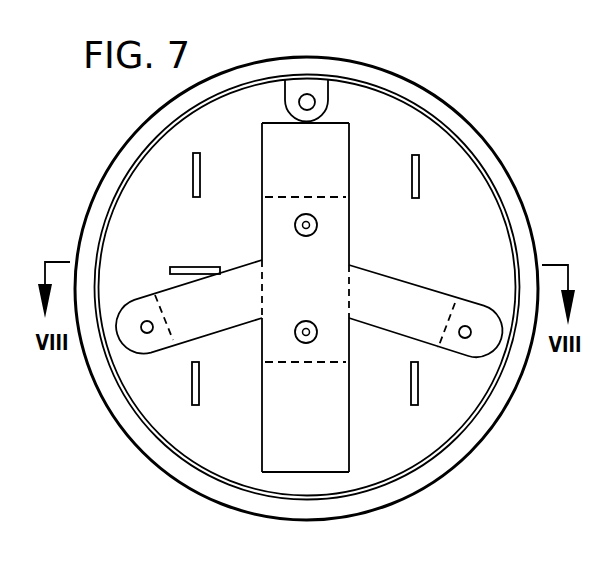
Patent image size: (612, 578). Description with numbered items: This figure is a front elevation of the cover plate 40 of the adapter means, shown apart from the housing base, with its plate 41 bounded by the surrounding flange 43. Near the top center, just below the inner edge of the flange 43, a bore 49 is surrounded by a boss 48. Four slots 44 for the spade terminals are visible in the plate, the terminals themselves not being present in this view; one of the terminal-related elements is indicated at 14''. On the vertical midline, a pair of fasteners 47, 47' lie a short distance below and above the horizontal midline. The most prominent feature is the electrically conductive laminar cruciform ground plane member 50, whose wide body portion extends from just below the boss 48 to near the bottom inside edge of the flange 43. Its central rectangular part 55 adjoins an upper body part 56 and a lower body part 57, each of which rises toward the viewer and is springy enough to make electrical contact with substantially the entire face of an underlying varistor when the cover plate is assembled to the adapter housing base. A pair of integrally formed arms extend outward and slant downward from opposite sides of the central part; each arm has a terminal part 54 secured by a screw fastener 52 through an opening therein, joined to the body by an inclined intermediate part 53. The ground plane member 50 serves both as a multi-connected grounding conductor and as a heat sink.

The cover plate 40 is at (155, 478).
The plate 41 is at (437, 240).
The flange 43 is at (455, 123).
The slots 44 is at (200, 178).
The fastener 47 is at (305, 305).
The fastener 47' is at (339, 229).
The boss 48 is at (285, 105).
The bore 49 is at (314, 106).
The ground plane member 50 is at (255, 150).
The screw fastener 52 is at (147, 320).
The intermediate part 53 is at (208, 318).
The terminal part 54 is at (137, 348).
The central rectangular part 55 is at (288, 248).
The upper body part 56 is at (317, 162).
The lower body part 57 is at (333, 428).
The tab 14'' is at (186, 250).